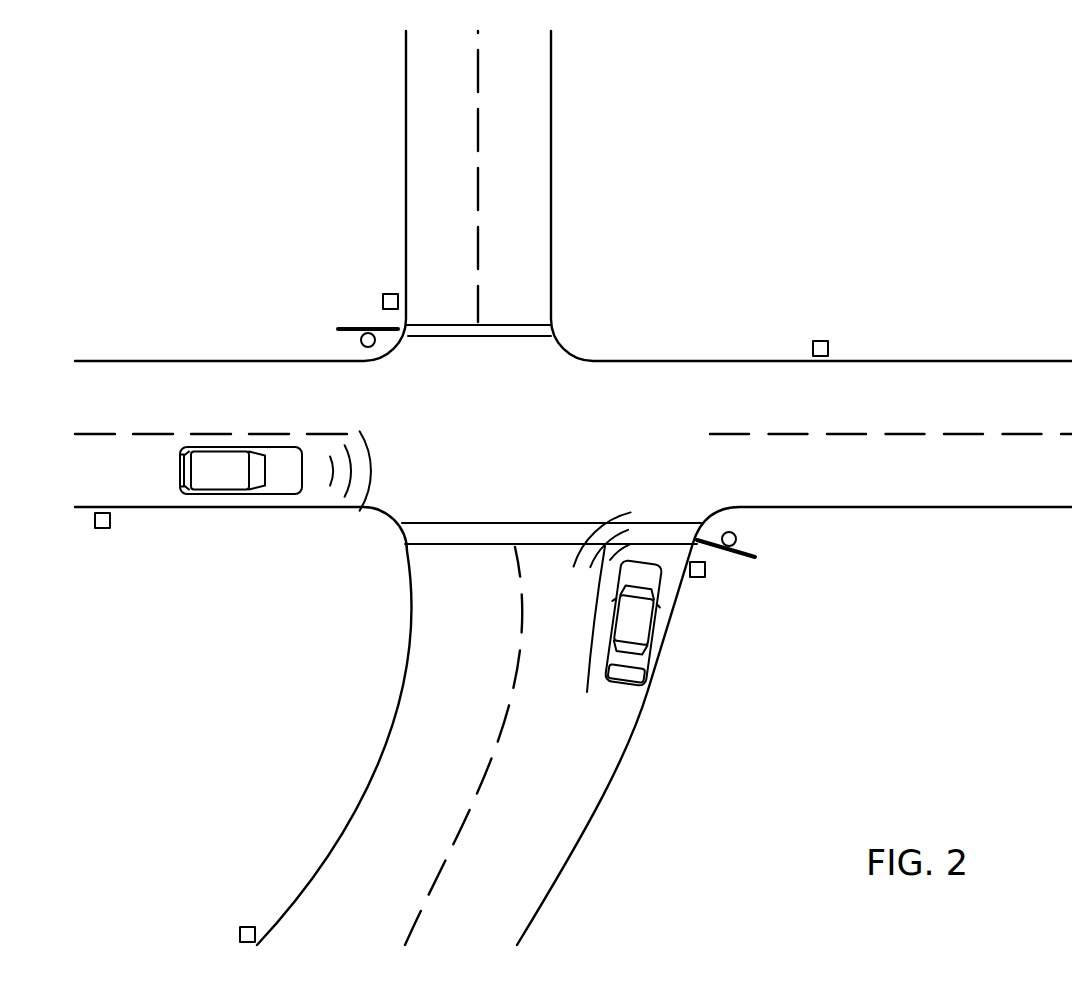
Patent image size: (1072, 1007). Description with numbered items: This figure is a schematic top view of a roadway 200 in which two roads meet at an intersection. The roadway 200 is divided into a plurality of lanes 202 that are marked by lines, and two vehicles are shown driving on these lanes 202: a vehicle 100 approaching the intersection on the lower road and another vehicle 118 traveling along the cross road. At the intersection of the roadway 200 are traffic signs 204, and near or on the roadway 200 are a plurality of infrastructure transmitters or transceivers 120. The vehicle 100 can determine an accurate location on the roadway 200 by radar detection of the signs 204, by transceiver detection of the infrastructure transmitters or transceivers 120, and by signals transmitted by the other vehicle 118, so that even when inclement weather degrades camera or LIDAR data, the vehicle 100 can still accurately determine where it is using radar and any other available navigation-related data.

The vehicle 100 is at (633, 645).
The vehicle 118 is at (292, 485).
The infrastructure transmitters or transceivers 120 is at (390, 294).
The roadway 200 is at (573, 488).
The lanes 202 is at (424, 189).
The traffic signs 204 is at (342, 328).